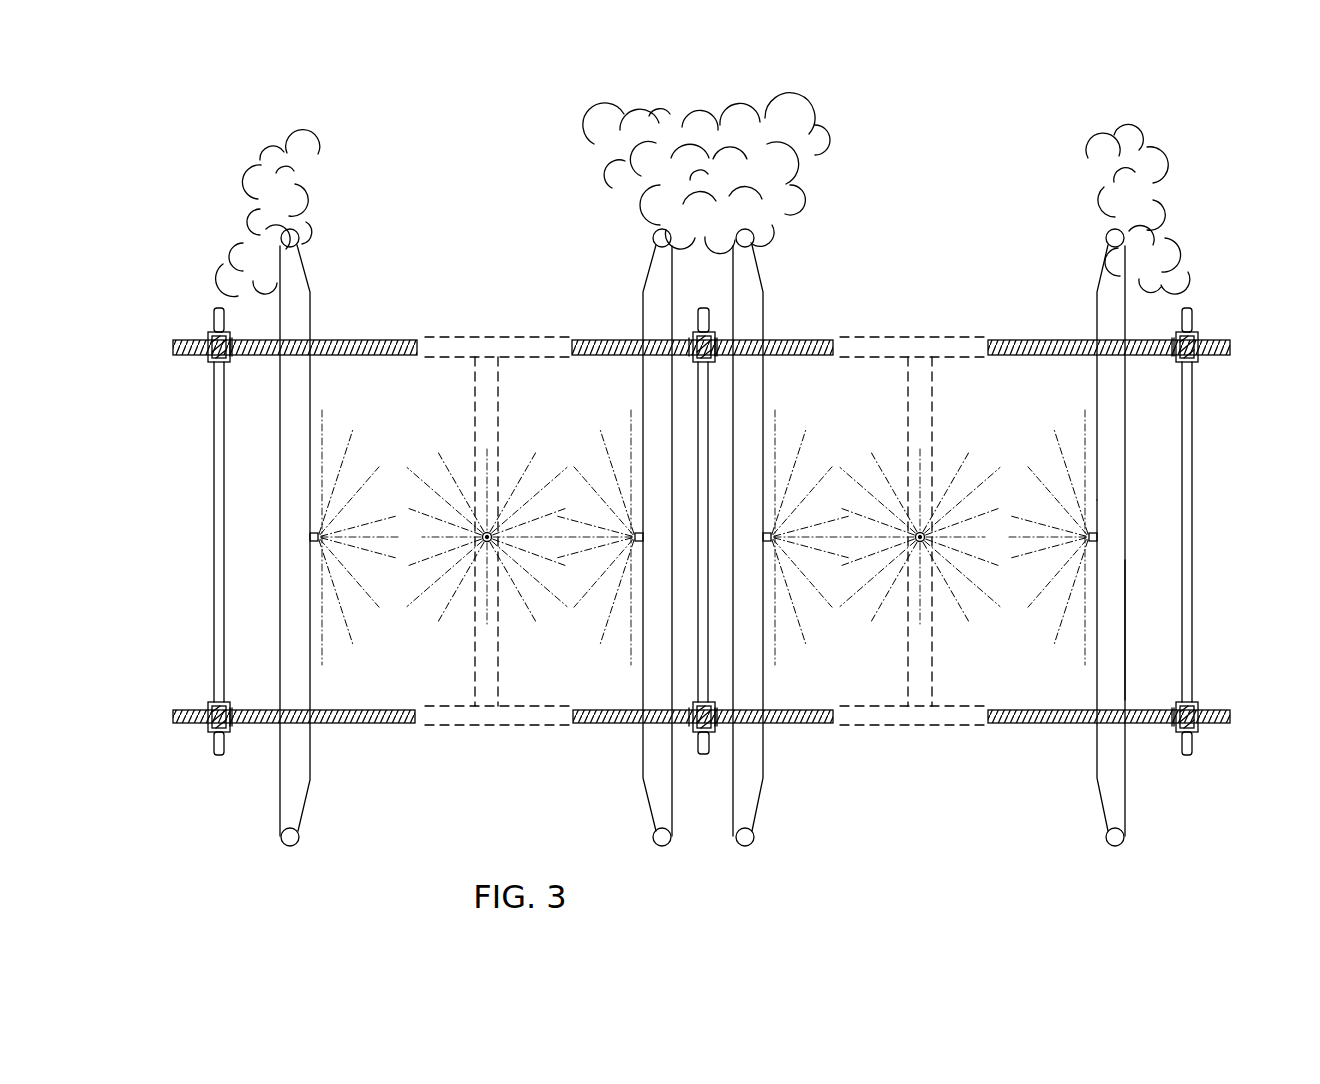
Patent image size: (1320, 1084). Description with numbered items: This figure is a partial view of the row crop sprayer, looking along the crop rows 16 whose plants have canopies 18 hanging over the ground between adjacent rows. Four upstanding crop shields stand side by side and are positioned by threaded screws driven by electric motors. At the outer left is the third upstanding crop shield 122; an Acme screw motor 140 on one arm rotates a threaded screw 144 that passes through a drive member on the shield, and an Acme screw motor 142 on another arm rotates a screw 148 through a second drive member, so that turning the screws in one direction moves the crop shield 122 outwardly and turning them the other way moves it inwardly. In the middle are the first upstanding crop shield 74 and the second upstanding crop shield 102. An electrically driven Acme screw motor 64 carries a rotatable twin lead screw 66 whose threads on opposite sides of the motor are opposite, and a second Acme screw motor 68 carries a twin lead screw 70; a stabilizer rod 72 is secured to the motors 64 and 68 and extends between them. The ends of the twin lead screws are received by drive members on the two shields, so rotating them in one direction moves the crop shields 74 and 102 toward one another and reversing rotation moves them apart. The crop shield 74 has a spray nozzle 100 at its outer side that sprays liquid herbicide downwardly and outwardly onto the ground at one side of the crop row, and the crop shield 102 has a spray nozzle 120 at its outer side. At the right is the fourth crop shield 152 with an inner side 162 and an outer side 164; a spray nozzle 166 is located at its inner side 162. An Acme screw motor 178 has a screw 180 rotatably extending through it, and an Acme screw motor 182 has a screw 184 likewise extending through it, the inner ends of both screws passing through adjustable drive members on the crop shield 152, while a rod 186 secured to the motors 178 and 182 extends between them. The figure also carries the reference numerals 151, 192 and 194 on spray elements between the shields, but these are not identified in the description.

The crop rows 16 is at (282, 113).
The canopies 18 is at (308, 168).
The Acme screw motor 64 is at (713, 340).
The twin lead screw 66 is at (790, 338).
The Acme screw motor 68 is at (713, 735).
The twin lead screw 70 is at (607, 724).
The stabilizer rod 72 is at (708, 430).
The first upstanding crop shield 74 is at (634, 308).
The spray nozzle 100 is at (638, 543).
The second upstanding crop shield 102 is at (760, 265).
The spray nozzle 120 is at (772, 533).
The third upstanding crop shield 122 is at (314, 314).
The Acme screw motor 140 is at (212, 366).
The Acme screw motor 142 is at (208, 700).
The screw 144 is at (196, 355).
The screw 148 is at (188, 724).
The side spray nozzle 151 is at (321, 533).
The fourth crop shield 152 is at (1135, 466).
The inner side 162 is at (1097, 683).
The outer side 164 is at (1126, 640).
The spray nozzle 166 is at (1097, 537).
The Acme screw motor 178 is at (1199, 340).
The screw 180 is at (1222, 340).
The Acme screw motor 182 is at (1199, 732).
The screw 184 is at (1200, 710).
The rod 186 is at (1193, 562).
The center spray nozzle 192 is at (490, 533).
The center spray nozzle 194 is at (923, 533).